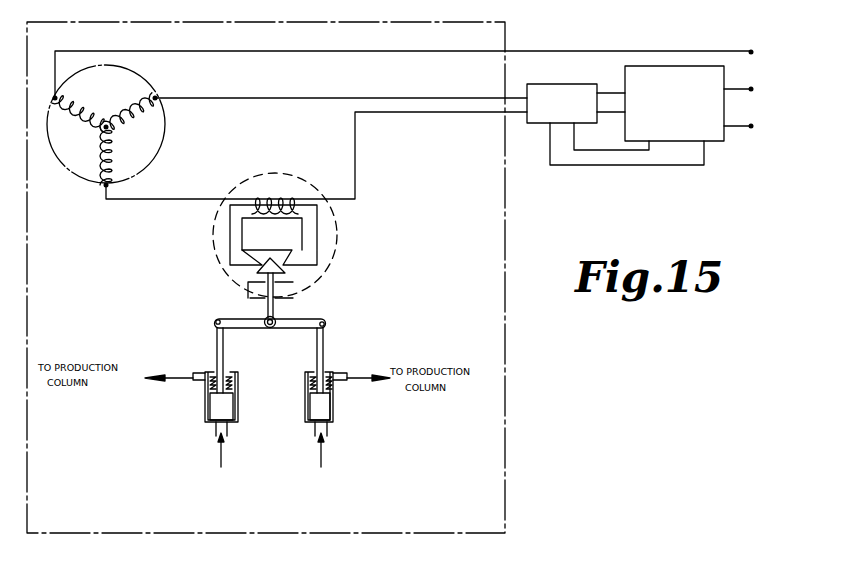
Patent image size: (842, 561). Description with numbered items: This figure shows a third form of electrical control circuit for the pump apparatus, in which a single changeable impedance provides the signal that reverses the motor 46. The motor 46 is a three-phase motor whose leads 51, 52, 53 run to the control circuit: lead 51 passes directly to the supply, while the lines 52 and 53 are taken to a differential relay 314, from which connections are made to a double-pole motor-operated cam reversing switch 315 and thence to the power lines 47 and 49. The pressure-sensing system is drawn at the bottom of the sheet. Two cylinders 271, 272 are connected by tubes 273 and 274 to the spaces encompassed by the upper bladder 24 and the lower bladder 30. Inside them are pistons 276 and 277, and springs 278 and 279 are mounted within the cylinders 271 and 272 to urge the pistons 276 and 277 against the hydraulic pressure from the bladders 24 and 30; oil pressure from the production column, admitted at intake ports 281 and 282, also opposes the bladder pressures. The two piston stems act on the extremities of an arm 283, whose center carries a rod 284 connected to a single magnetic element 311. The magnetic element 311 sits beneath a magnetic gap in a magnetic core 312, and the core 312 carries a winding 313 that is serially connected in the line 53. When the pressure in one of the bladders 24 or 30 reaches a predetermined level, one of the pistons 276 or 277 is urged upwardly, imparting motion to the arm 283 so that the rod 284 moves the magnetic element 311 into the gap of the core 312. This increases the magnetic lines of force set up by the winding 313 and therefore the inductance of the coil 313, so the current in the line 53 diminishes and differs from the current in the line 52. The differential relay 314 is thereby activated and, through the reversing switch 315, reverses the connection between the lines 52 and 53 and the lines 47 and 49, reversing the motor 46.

The motor 46 is at (138, 88).
The lead 51 is at (284, 51).
The line 52 is at (279, 97).
The line 53 is at (198, 198).
The differential relay 314 is at (558, 84).
The double-pole motor-operated cam reversing switch 315 is at (668, 66).
The line 47 is at (752, 75).
The line 49 is at (734, 126).
The winding 313 is at (290, 199).
The magnetic core 312 is at (318, 256).
The magnetic element 311 is at (288, 272).
The rod 284 is at (266, 303).
The arm 283 is at (310, 319).
The intake port 281 is at (212, 362).
The intake port 282 is at (345, 372).
The spring 278 is at (232, 386).
The spring 279 is at (330, 378).
The cylinder 271 is at (238, 406).
The cylinder 272 is at (335, 394).
The piston 276 is at (205, 412).
The piston 277 is at (305, 422).
The tube 273 is at (228, 435).
The tube 274 is at (328, 436).
The upper bladder 24 is at (192, 493).
The lower bladder 30 is at (320, 493).